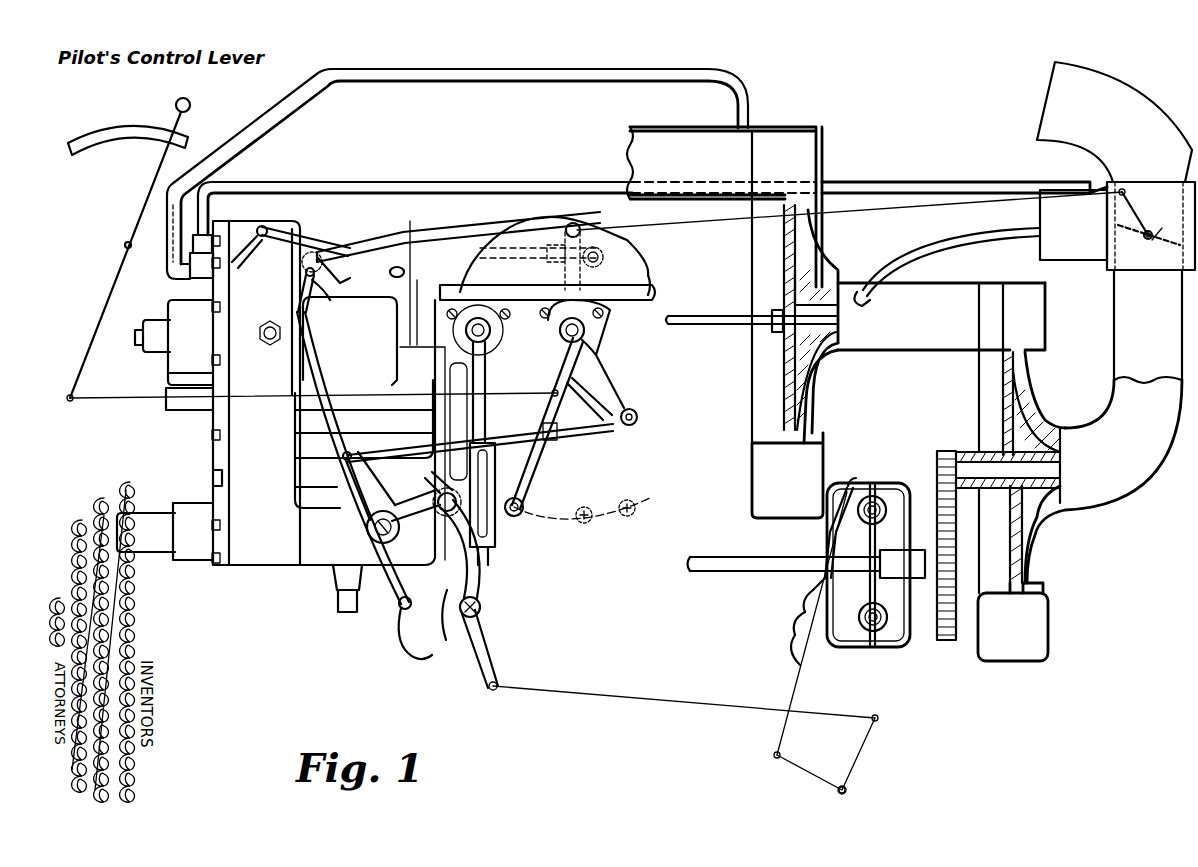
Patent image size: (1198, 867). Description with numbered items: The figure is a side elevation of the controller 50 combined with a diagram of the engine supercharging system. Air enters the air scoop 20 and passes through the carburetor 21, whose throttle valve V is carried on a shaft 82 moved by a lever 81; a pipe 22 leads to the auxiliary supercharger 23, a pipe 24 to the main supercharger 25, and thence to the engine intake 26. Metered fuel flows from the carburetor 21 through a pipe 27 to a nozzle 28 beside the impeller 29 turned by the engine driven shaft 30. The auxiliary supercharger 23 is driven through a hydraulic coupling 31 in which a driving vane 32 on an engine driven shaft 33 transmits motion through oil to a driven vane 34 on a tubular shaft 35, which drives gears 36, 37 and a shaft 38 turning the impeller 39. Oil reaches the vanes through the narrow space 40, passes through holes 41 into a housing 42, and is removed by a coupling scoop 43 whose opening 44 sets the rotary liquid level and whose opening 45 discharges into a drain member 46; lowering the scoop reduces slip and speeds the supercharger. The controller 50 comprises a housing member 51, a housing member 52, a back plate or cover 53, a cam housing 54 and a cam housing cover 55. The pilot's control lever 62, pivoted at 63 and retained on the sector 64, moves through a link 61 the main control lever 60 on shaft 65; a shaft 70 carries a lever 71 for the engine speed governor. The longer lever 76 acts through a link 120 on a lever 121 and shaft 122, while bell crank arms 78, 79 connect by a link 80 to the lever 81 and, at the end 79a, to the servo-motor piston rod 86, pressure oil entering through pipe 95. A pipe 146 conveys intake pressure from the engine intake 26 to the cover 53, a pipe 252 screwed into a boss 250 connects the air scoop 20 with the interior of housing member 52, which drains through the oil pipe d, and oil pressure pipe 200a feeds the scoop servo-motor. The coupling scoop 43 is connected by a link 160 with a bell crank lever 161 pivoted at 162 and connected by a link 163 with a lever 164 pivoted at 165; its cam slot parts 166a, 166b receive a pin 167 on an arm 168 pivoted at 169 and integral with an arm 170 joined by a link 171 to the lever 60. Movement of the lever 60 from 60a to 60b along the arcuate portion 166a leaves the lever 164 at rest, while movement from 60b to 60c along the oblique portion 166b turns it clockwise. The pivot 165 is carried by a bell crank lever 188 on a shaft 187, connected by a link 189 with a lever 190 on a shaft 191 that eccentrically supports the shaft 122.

The air scoop 20 is at (1046, 80).
The carburetor 21 is at (1082, 172).
The pipe 22 is at (1112, 350).
The auxiliary supercharger 23 is at (1003, 377).
The pipe 24 is at (898, 352).
The main supercharger 25 is at (752, 377).
The engine intake 26 is at (712, 127).
The pipe 27 is at (902, 256).
The nozzle 28 is at (858, 307).
The supercharger impeller 29 is at (783, 246).
The engine driven shaft 30 is at (736, 316).
The hydraulic coupling 31 is at (866, 483).
The driving vane 32 is at (860, 540).
The engine driven shaft 33 is at (762, 557).
The driven vane 34 is at (890, 492).
The tubular shaft 35 is at (918, 552).
The gear 36 is at (958, 519).
The gear 37 is at (947, 451).
The shaft 38 is at (985, 452).
The impeller 39 is at (1062, 441).
The narrow space 40 is at (812, 577).
The holes 41 is at (850, 480).
The housing 42 is at (878, 640).
The coupling scoop 43 is at (800, 600).
The opening 44 is at (842, 488).
The opening 45 is at (793, 622).
The drain member 46 is at (793, 656).
The controller 50 is at (302, 216).
The housing member 51 is at (420, 280).
The housing member 52 is at (285, 567).
The back plate or cover 53 is at (212, 478).
The cam housing 54 is at (606, 358).
The cam housing cover 55 is at (648, 273).
The main control lever 60 is at (520, 490).
The lever position 60a is at (574, 515).
The lever position 60b is at (586, 524).
The lever position 60c is at (630, 517).
The link 61 is at (386, 397).
The pilot's control lever 62 is at (178, 101).
The pivot 63 is at (125, 245).
The sector 64 is at (126, 126).
The shaft 65 is at (598, 335).
The shaft 70 is at (486, 332).
The lever 71 is at (486, 381).
The longer lever 76 is at (604, 258).
The arm 78 is at (574, 224).
The arm 79 is at (612, 394).
The pivot 79a is at (638, 417).
The link 80 is at (925, 204).
The lever 81 is at (1141, 220).
The shaft 82 is at (1148, 240).
The servo-motor piston rod 86 is at (513, 426).
The pipe 95 is at (170, 400).
The link 120 is at (466, 238).
The lever 121 is at (342, 283).
The shaft 122 is at (326, 292).
The pipe 146 is at (166, 274).
The link 160 is at (800, 691).
The bell crank lever 161 is at (818, 752).
The pivot 162 is at (848, 790).
The link 163 is at (690, 696).
The lever 164 is at (496, 652).
The pivot 165 is at (481, 607).
The arcuate cam slot portion 166a is at (438, 502).
The oblique cam slot portion 166b is at (400, 606).
The pin 167 is at (436, 480).
The arm 168 is at (340, 577).
The pivot 169 is at (372, 543).
The arm 170 is at (365, 503).
The link 171 is at (404, 440).
The shaft 187 is at (443, 598).
The bell crank lever 188 is at (425, 657).
The link 189 is at (352, 530).
The lever 190 is at (300, 290).
The shaft 191 is at (298, 261).
The oil pressure pipe 200a is at (336, 603).
The boss 250 is at (197, 252).
The pipe 252 is at (289, 182).
The drain conduit d is at (145, 513).